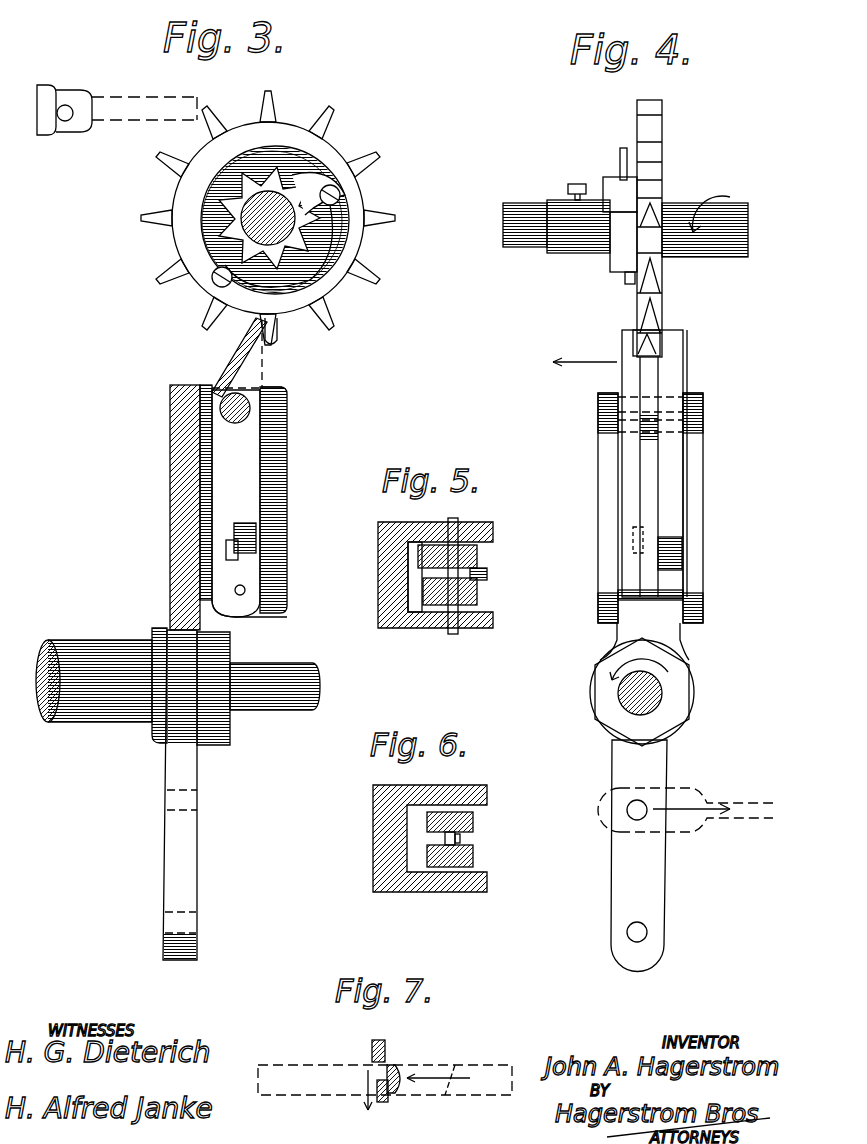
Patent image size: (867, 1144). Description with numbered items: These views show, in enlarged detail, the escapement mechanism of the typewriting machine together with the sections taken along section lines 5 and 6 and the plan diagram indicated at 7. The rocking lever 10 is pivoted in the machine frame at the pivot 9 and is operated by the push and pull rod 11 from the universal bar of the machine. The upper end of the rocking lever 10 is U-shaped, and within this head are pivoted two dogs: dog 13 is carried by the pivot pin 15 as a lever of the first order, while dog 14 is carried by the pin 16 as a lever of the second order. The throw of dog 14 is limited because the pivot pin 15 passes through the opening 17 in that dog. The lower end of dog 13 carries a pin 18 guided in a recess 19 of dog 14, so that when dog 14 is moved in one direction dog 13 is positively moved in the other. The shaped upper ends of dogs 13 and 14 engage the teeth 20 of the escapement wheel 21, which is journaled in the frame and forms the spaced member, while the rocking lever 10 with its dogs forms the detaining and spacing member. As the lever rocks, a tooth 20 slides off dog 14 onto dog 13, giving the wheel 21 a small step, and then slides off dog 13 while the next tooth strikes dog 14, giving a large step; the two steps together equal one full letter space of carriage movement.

In FIG. 3, the section line 5— 5 is at (220, 405).
In FIG. 3, the section line 6— 6 is at (200, 537).
In FIG. 3, the wheel teeth 7 is at (233, 323).
In FIG. 3, the pivot 9 is at (115, 690).
In FIG. 4, the pivot 9 is at (650, 697).
In FIG. 3, the rocking lever 10 is at (176, 777).
In FIG. 4, the rocking lever 10 is at (625, 765).
In FIG. 5, the rocking lever 10 is at (390, 588).
In FIG. 6, the rocking lever 10 is at (378, 840).
In FIG. 4, the push and pull rod 11 is at (700, 803).
In FIG. 3, the dog 13 is at (235, 360).
In FIG. 4, the dog 13 is at (683, 353).
In FIG. 5, the dog 13 is at (478, 555).
In FIG. 6, the dog 13 is at (475, 818).
In FIG. 7, the dog 13 is at (385, 1045).
In FIG. 3, the dog 14 is at (250, 370).
In FIG. 5, the dog 14 is at (478, 597).
In FIG. 6, the dog 14 is at (473, 865).
In FIG. 7, the dog 14 is at (388, 1100).
In FIG. 3, the pivot pin 15 is at (285, 395).
In FIG. 4, the pivot pin 15 is at (706, 415).
In FIG. 5, the pivot pin 15 is at (458, 525).
In FIG. 3, the pin 16 is at (248, 598).
In FIG. 4, the pin 16 is at (670, 595).
In FIG. 3, the opening 17 is at (172, 437).
In FIG. 5, the opening 17 is at (430, 612).
In FIG. 3, the pin 18 is at (258, 530).
In FIG. 4, the pin 18 is at (682, 545).
In FIG. 6, the pin 18 is at (457, 838).
In FIG. 3, the recess 19 is at (200, 562).
In FIG. 4, the recess 19 is at (633, 545).
In FIG. 6, the recess 19 is at (473, 853).
In FIG. 3, the teeth 20 is at (215, 318).
In FIG. 4, the teeth 20 is at (640, 335).
In FIG. 7, the teeth 20 is at (400, 1070).
In FIG. 3, the escapement wheel 21 is at (277, 232).
In FIG. 4, the escapement wheel 21 is at (668, 130).
In FIG. 7, the escapement wheel 21 is at (510, 1070).